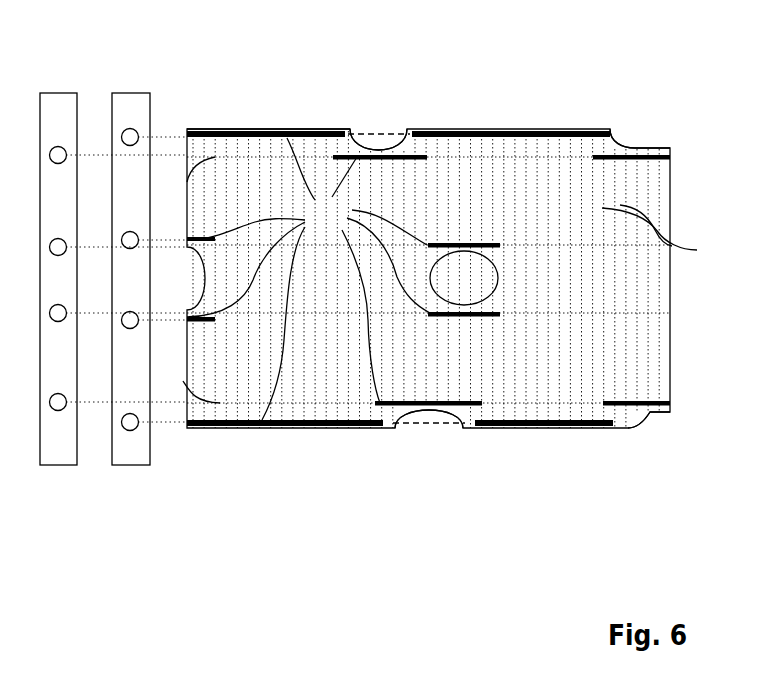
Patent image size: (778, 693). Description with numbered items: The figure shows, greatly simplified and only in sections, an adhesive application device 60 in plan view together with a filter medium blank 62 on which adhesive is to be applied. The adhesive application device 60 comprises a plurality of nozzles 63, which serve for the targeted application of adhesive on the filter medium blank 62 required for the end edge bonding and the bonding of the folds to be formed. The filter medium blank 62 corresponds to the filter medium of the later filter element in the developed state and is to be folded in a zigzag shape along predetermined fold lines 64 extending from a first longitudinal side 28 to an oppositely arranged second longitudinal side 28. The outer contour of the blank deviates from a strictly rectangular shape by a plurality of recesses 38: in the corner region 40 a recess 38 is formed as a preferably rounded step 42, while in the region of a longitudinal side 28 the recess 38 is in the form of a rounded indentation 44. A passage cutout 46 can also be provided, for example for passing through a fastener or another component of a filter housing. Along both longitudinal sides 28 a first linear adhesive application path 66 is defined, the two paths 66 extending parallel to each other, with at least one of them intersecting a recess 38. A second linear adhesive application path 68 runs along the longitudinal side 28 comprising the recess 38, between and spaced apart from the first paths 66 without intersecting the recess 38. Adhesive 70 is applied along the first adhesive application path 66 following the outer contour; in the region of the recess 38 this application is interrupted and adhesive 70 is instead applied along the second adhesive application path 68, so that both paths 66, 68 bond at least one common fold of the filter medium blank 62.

The longitudinal side 28 is at (330, 128).
The recess 38 is at (543, 283).
The corner region 40 is at (648, 129).
The rounded step 42 is at (674, 290).
The indentation 44 is at (400, 122).
The passage cutout 46 is at (489, 272).
The adhesive application device 60 is at (140, 271).
The filter medium blank 62 is at (633, 75).
The nozzles 63 is at (126, 239).
The fold lines 64 is at (662, 233).
The first linear adhesive application path 66 is at (231, 137).
The second linear adhesive application path 68 is at (188, 280).
The adhesive 70 is at (308, 279).